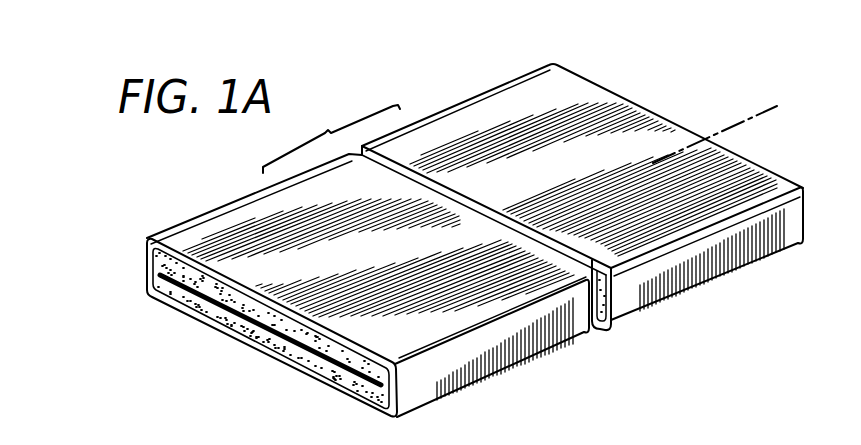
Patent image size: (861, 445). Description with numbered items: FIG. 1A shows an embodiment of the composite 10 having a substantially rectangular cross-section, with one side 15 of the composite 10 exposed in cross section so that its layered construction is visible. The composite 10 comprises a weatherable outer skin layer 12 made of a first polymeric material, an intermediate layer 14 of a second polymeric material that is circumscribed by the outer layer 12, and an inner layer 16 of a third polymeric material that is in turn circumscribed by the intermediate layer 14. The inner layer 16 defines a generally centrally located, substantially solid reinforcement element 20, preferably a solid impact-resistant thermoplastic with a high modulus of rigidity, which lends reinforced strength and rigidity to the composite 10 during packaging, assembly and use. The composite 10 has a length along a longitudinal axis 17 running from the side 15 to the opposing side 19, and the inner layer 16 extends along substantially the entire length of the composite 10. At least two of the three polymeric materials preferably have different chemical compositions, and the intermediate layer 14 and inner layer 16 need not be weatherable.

The composite 10 is at (703, 96).
The outer skin layer 12 is at (493, 124).
The intermediate layer 14 is at (327, 373).
The side 15 is at (128, 241).
The inner layer 16 is at (164, 283).
The longitudinal axis 17 is at (753, 117).
The opposing side 19 is at (612, 90).
The reinforcement element 20 is at (247, 318).